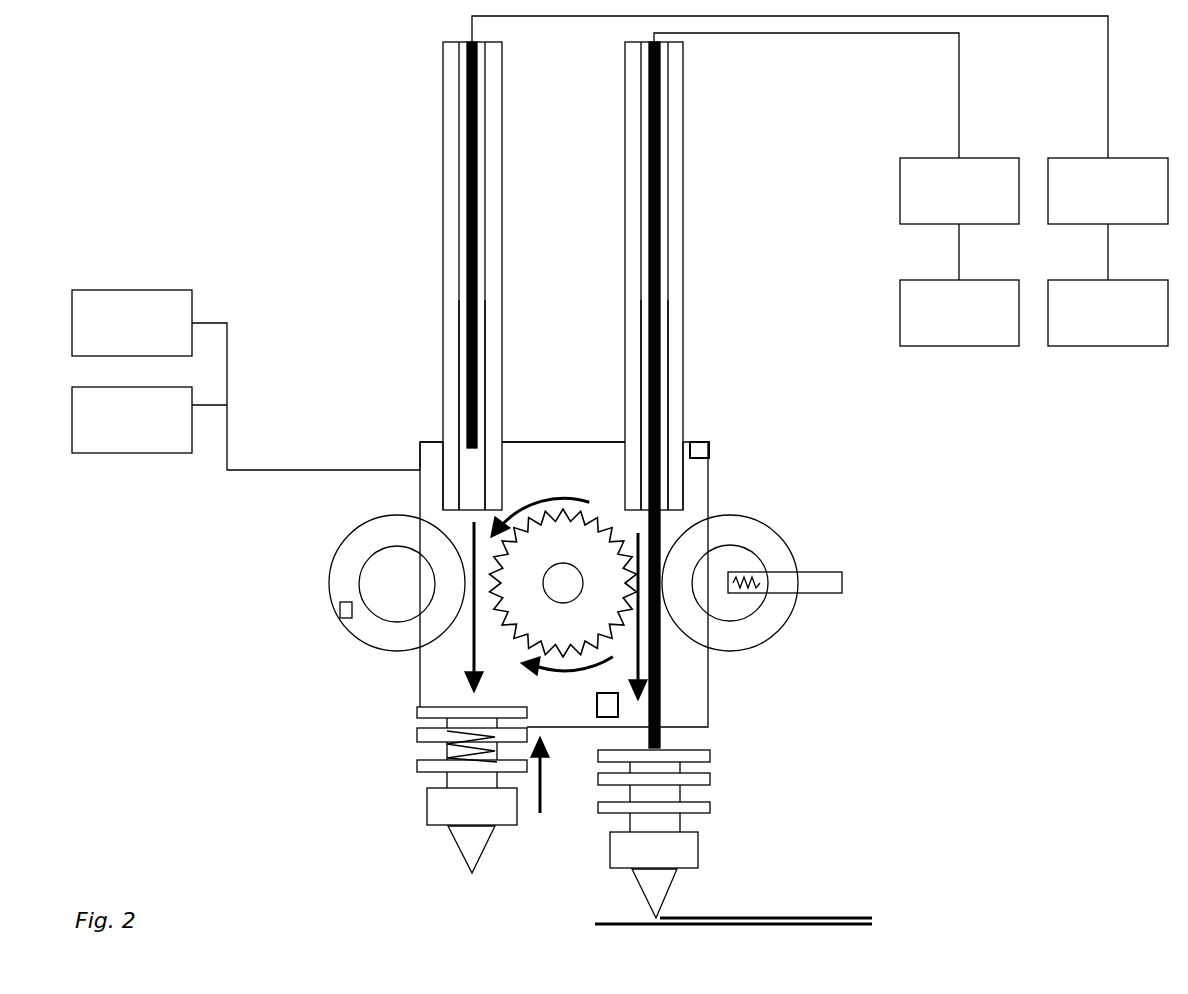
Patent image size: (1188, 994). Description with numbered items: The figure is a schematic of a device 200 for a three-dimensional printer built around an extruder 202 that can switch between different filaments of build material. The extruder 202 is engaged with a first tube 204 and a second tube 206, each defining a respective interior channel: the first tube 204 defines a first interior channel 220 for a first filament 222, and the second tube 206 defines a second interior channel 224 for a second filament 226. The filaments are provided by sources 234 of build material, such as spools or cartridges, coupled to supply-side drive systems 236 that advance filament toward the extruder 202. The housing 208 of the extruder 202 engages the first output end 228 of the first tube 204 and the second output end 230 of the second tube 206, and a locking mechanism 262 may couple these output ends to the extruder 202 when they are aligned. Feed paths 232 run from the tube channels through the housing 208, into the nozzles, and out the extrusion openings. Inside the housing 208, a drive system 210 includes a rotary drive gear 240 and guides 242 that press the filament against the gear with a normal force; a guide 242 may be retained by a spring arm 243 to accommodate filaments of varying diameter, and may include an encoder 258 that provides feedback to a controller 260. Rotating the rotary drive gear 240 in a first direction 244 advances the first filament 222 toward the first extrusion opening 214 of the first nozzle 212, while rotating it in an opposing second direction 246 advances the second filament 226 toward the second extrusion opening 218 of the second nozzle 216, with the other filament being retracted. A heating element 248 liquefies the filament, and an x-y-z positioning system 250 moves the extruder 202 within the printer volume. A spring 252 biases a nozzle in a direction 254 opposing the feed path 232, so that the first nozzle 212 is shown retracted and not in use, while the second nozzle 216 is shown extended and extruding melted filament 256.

The device 200 is at (215, 124).
The extruder 202 is at (365, 452).
The first tube 204 is at (443, 190).
The second tube 206 is at (683, 180).
The housing 208 is at (527, 455).
The drive system 210 is at (792, 500).
The first nozzle 212 is at (428, 808).
The first extrusion opening 214 is at (460, 877).
The second nozzle 216 is at (698, 852).
The second extrusion opening 218 is at (655, 915).
The first interior channel 220 is at (472, 462).
The first filament 222 is at (465, 312).
The second interior channel 224 is at (660, 413).
The second filament 226 is at (660, 300).
The first output end 228 is at (443, 505).
The second output end 230 is at (683, 507).
The feed paths 232 is at (475, 650).
The sources of build material 234 is at (1034, 313).
The supply-side drive systems 236 is at (1034, 219).
The rotary drive gear 240 is at (600, 553).
The guides 242 is at (342, 572).
The spring arm 243 is at (842, 572).
The first direction 244 is at (586, 500).
The second direction 246 is at (580, 672).
The heating element 248 is at (608, 717).
The x-y-z positioning system 250 is at (149, 420).
The spring 252 is at (420, 758).
The direction 254 is at (537, 818).
The melted filament 256 is at (765, 916).
The encoder 258 is at (340, 612).
The controller 260 is at (246, 380).
The locking mechanism 262 is at (709, 450).